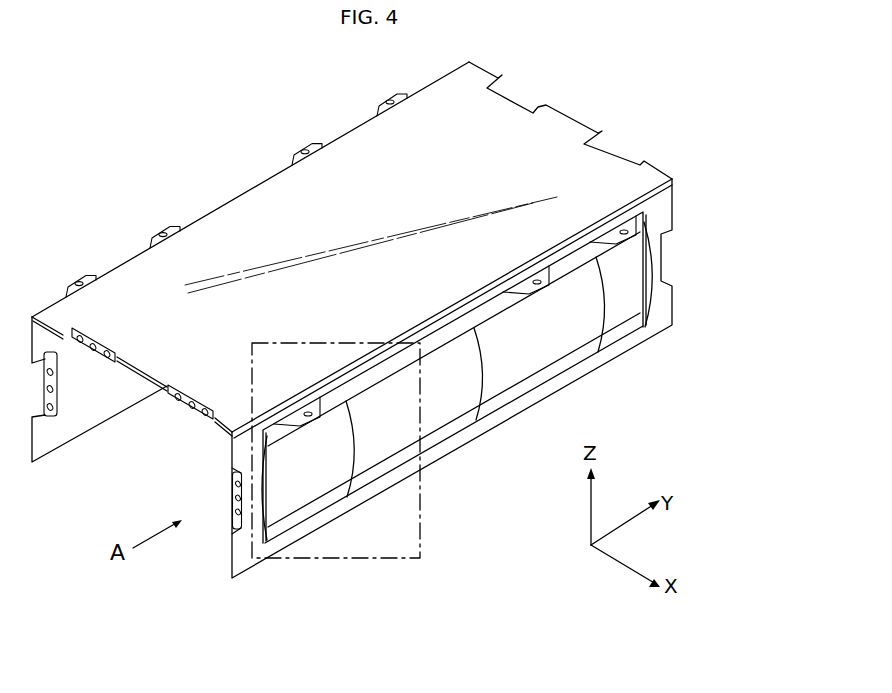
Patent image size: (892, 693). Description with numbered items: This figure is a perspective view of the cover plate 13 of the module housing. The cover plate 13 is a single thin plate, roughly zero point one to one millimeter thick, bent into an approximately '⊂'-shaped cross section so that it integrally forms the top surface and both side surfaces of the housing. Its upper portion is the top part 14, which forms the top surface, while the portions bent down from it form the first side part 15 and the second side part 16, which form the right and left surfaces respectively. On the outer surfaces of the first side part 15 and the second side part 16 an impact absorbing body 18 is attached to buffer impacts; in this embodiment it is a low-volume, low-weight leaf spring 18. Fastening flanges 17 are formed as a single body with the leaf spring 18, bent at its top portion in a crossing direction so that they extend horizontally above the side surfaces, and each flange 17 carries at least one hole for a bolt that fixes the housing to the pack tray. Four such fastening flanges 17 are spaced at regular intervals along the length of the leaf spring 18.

The cover plate 13 is at (372, 338).
The top part 14 is at (252, 210).
The first side part 15 is at (242, 562).
The second side part 16 is at (56, 440).
The fastening flange 17 is at (170, 226).
The impact absorbing body (leaf spring) 18 is at (437, 408).